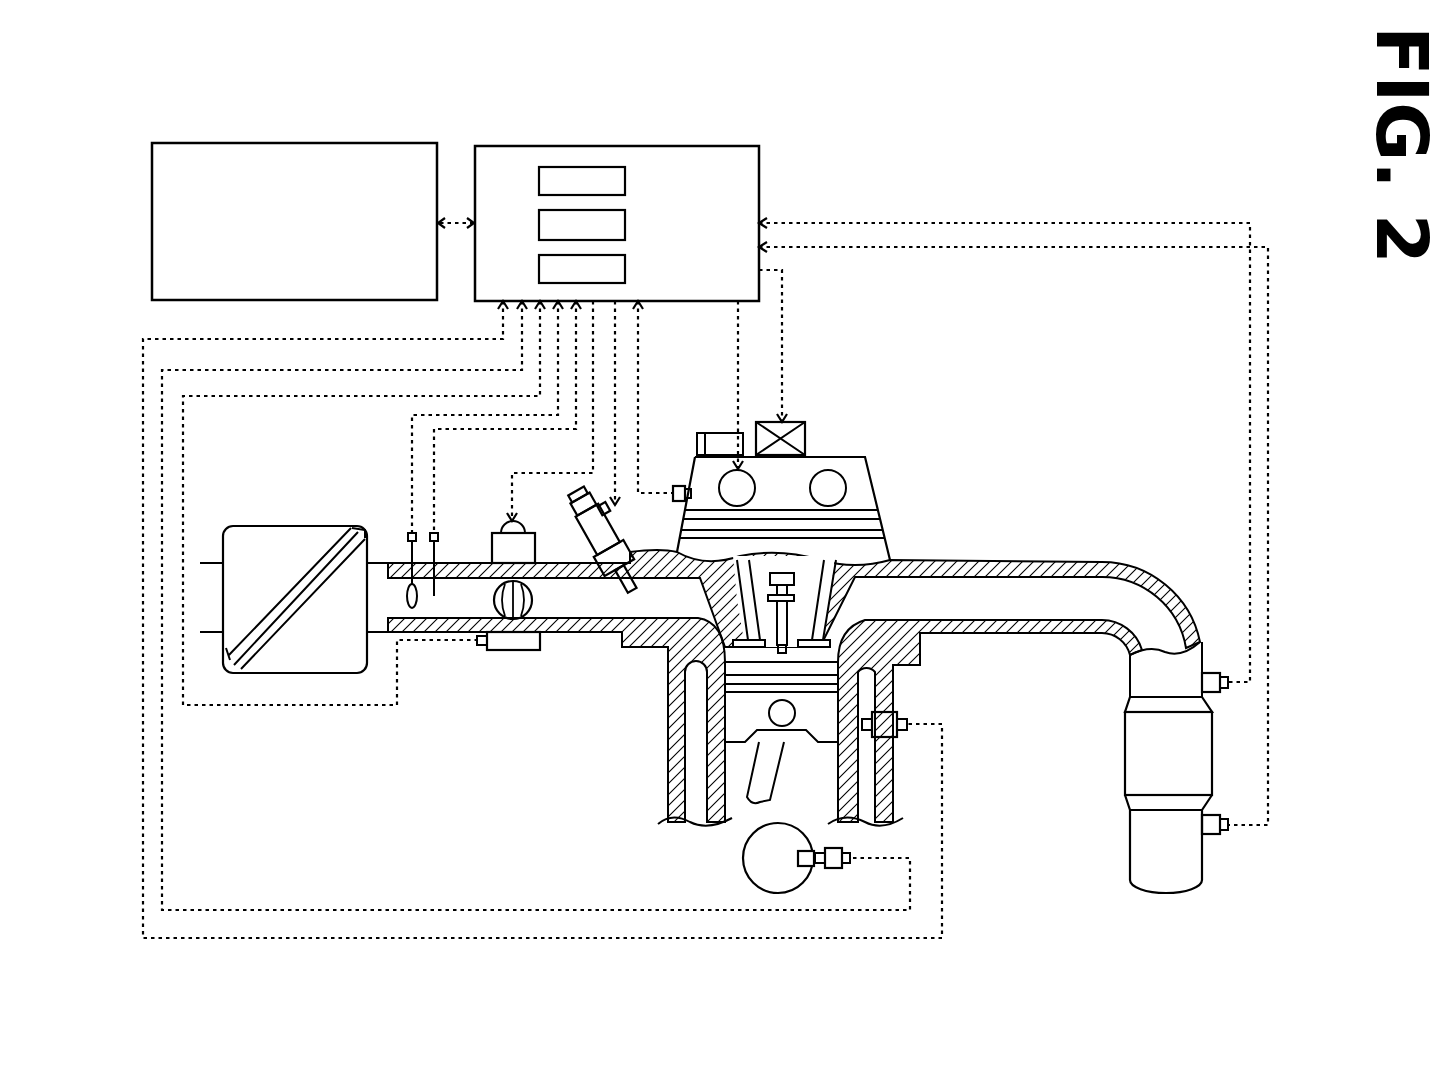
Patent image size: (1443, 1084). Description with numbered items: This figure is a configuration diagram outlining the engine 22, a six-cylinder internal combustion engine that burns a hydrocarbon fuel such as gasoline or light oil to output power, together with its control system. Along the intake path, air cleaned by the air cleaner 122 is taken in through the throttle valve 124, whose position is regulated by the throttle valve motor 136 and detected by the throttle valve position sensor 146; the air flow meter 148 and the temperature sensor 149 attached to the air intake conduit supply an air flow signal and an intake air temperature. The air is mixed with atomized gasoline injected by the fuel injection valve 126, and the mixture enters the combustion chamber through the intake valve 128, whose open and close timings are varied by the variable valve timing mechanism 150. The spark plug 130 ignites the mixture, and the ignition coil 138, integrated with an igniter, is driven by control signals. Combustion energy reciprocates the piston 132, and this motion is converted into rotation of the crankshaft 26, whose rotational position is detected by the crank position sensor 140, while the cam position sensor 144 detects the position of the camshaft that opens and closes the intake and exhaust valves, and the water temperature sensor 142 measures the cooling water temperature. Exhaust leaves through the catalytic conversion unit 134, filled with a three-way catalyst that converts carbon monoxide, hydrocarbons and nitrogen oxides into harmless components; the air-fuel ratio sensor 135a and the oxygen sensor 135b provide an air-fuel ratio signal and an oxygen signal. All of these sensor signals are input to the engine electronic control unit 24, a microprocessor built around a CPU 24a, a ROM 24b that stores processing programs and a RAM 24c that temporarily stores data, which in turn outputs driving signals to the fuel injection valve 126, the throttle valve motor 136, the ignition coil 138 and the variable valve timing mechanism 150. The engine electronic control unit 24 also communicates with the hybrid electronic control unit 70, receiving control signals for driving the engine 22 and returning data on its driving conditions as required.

The engine 22 is at (748, 617).
The engine electronic control unit 24 is at (617, 197).
The CPU 24a is at (625, 180).
The ROM 24b is at (625, 225).
The RAM 24c is at (625, 268).
The crankshaft 26 is at (743, 858).
The hybrid electronic control unit 70 is at (300, 143).
The air cleaner 122 is at (297, 527).
The throttle valve 124 is at (545, 580).
The fuel injection valve 126 is at (584, 582).
The intake valve 128 is at (742, 640).
The spark plug 130 is at (785, 632).
The piston 132 is at (740, 712).
The catalytic conversion unit 134 is at (1138, 733).
The air-fuel ratio sensor 135a is at (1212, 672).
The oxygen sensor 135b is at (1220, 835).
The throttle valve motor 136 is at (494, 532).
The ignition coil 138 is at (806, 438).
The crank position sensor 140 is at (835, 870).
The water temperature sensor 142 is at (927, 693).
The cam position sensor 144 is at (676, 487).
The throttle valve position sensor 146 is at (515, 652).
The air flow meter 148 is at (407, 533).
The temperature sensor 149 is at (440, 534).
The variable valve timing mechanism 150 is at (878, 500).